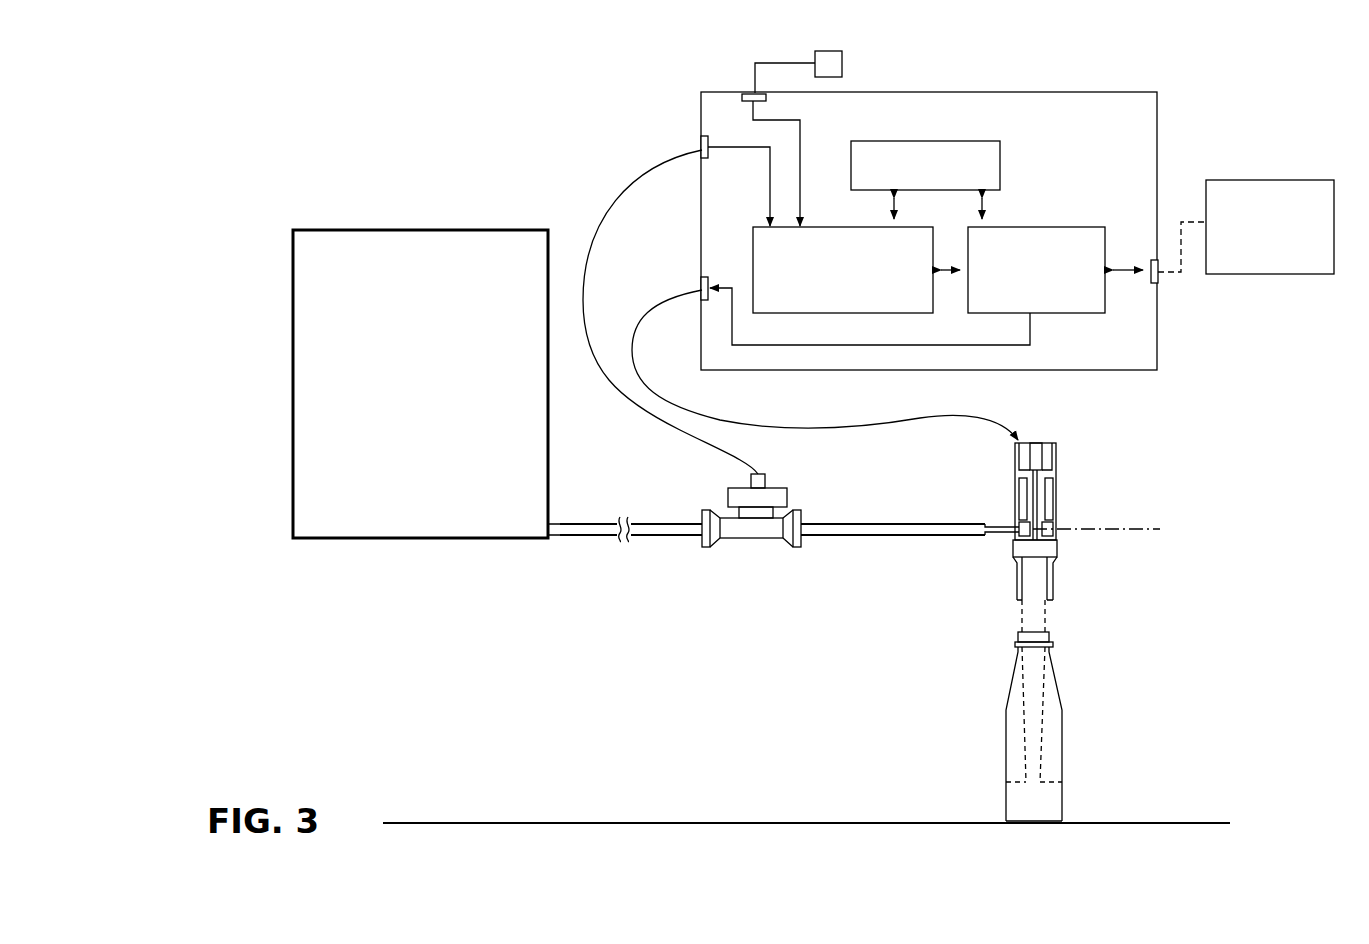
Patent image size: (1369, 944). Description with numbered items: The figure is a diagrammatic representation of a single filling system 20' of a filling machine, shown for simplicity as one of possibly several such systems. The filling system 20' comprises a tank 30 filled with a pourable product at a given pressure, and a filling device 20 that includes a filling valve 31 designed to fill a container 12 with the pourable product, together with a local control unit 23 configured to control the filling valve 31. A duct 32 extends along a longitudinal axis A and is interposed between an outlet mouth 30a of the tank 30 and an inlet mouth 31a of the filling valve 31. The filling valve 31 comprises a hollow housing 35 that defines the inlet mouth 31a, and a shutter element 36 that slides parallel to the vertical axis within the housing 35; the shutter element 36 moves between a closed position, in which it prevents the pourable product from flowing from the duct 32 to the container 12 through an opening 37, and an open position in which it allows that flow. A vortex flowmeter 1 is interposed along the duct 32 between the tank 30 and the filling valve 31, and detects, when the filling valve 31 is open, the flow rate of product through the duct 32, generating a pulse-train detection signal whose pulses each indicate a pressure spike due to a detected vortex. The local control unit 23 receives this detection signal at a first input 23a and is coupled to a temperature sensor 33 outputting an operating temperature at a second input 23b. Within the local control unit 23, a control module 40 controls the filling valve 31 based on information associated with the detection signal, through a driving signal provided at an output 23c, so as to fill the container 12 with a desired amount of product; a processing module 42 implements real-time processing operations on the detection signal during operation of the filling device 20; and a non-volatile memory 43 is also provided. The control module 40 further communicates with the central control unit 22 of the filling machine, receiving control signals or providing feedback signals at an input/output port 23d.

The vortex flowmeter 1 is at (752, 530).
The container 12 is at (1015, 736).
The filling device 20 is at (1051, 510).
The filling system 20' is at (1264, 369).
The central control unit 22 is at (1320, 276).
The local control unit 23 is at (1150, 373).
The first input 23a is at (702, 147).
The second input 23b is at (744, 93).
The output 23c is at (702, 285).
The input/output port 23d is at (1158, 278).
The tank 30 is at (463, 523).
The outlet mouth 30a is at (554, 529).
The filling valve 31 is at (1062, 463).
The inlet mouth 31a is at (1006, 541).
The duct 32 is at (866, 528).
The temperature sensor 33 is at (843, 64).
The hollow housing 35 is at (1020, 488).
The shutter element 36 is at (1037, 492).
The opening 37 is at (1044, 544).
The control module 40 is at (1098, 232).
The processing module 42 is at (760, 235).
The non-volatile memory 43 is at (1002, 147).
The longitudinal axis A is at (1148, 529).